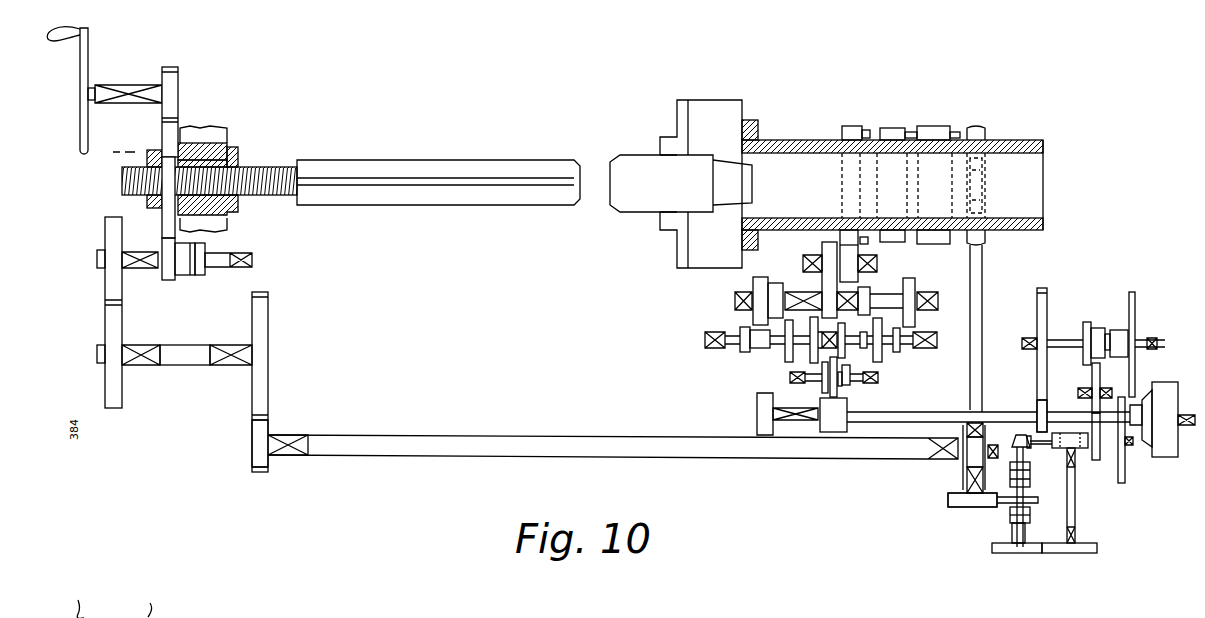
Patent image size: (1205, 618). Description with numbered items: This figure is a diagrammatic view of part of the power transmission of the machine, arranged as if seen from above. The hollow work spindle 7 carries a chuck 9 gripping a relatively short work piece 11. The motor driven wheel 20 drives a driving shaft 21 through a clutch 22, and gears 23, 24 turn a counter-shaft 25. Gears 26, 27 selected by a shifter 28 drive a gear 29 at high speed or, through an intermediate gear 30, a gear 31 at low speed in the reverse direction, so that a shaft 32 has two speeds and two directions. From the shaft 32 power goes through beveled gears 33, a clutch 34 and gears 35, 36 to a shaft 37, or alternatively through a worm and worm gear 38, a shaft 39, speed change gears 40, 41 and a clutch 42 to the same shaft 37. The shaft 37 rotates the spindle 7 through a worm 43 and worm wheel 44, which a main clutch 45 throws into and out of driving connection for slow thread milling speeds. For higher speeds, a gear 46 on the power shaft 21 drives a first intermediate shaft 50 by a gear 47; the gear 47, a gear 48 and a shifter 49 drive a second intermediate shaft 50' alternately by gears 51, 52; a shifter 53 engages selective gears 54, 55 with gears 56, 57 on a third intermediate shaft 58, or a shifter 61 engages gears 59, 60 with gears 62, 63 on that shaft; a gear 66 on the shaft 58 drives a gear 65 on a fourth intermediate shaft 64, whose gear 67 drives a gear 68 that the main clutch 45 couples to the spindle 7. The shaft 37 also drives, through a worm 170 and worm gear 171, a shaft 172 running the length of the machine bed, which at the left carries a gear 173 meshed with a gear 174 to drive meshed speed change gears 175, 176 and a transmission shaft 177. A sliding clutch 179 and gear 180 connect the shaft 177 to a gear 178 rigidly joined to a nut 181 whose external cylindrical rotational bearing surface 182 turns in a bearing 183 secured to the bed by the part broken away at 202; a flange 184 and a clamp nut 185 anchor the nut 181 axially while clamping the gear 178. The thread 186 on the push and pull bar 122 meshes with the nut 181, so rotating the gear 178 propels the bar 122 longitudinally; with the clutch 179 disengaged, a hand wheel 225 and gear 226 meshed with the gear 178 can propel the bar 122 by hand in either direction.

The hollow work spindle 7 is at (1020, 140).
The chuck 9 is at (706, 105).
The work piece 11 is at (640, 172).
The motor driven wheel 20 is at (1163, 382).
The driving shaft 21 is at (995, 412).
The clutch 22 is at (1140, 445).
The gear 23 is at (1040, 414).
The gear 24 is at (1040, 367).
The counter-shaft 25 is at (1057, 340).
The gear 26 is at (1087, 322).
The gear 27 is at (1131, 292).
The shifter 28 is at (1105, 334).
The gear 29 is at (1124, 484).
The intermediate gear 30 is at (1092, 375).
The gear 31 is at (1096, 462).
The shaft 32 is at (1040, 445).
The beveled gears 33 is at (1020, 438).
The clutch 34 is at (1030, 476).
The gear 35 is at (1038, 500).
The gear 36 is at (962, 505).
The shaft 37 is at (970, 374).
The worm and worm gear 38 is at (1064, 448).
The shaft 39 is at (1077, 507).
The speed change gear 40 is at (1058, 553).
The speed change gear 41 is at (1030, 553).
The clutch 42 is at (1030, 515).
The worm 43 is at (990, 188).
The worm wheel 44 is at (988, 128).
The main clutch 45 is at (930, 128).
The gear 46 is at (848, 430).
The gear 47 is at (848, 392).
The gear 48 is at (824, 393).
The shifter 49 is at (845, 370).
The first intermediate shaft 50 is at (803, 387).
The second intermediate shaft 50' is at (722, 349).
The gear 51 is at (812, 362).
The gear 52 is at (845, 352).
The shifter 53 is at (767, 349).
The selective gear 54 is at (745, 352).
The selective gear 55 is at (788, 362).
The gear 56 is at (762, 276).
The gear 57 is at (777, 286).
The third intermediate shaft 58 is at (740, 308).
The gear 59 is at (880, 362).
The gear 60 is at (898, 352).
The shifter 61 is at (864, 333).
The gear 62 is at (868, 292).
The gear 63 is at (910, 284).
The fourth intermediate shaft 64 is at (806, 260).
The gear 65 is at (824, 275).
The gear 66 is at (835, 288).
The gear 67 is at (860, 258).
The gear 68 is at (850, 128).
The push and pull bar 122 is at (417, 165).
The worm 170 is at (965, 462).
The worm gear 171 is at (963, 470).
The shaft 172 is at (856, 463).
The gear 173 is at (260, 433).
The gear 174 is at (262, 400).
The speed change gear 175 is at (110, 375).
The speed change gear 176 is at (110, 283).
The transmission shaft 177 is at (143, 270).
The gear 178 is at (165, 218).
The sliding clutch 179 is at (193, 275).
The gear 180 is at (168, 275).
The nut 181 is at (238, 164).
The external cylindrical rotational bearing surface 182 is at (215, 163).
The bearing 183 is at (212, 148).
The flange 184 is at (238, 207).
The clamp nut 185 is at (148, 155).
The thread 186 is at (282, 167).
The part broken away 202 is at (203, 128).
The hand wheel 225 is at (80, 64).
The gear 226 is at (176, 79).